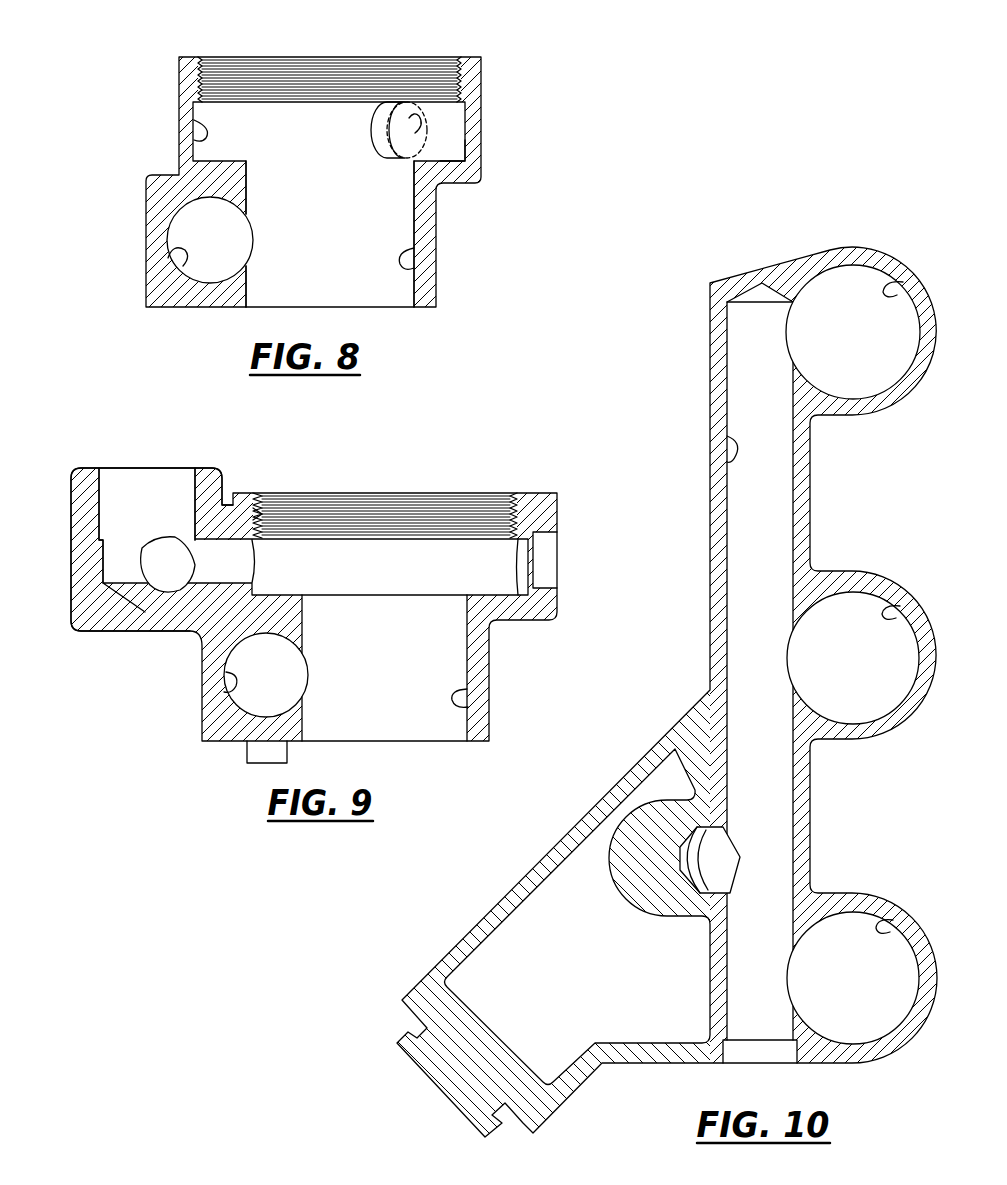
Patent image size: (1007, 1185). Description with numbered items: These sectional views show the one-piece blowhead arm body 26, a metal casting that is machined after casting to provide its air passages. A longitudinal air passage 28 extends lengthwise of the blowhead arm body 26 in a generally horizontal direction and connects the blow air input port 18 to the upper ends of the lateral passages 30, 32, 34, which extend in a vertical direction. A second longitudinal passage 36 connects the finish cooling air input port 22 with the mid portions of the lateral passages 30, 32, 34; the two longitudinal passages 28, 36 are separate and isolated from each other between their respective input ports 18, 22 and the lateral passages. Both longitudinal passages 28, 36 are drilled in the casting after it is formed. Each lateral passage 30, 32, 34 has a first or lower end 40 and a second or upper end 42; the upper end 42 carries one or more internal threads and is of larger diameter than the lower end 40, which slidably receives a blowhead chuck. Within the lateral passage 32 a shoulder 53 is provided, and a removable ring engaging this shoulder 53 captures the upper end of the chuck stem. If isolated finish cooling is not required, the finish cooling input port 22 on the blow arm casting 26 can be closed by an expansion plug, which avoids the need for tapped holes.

In FIG. 9, the blow air input port 18 is at (100, 507).
In FIG. 10, the finish cooling air input port 22 is at (706, 880).
In FIG. 8, the blowhead arm body 26 is at (428, 46).
In FIG. 9, the blowhead arm body 26 is at (464, 471).
In FIG. 10, the blowhead arm body 26 is at (711, 358).
In FIG. 8, the longitudinal air passage 28 is at (415, 133).
In FIG. 9, the longitudinal air passage 28 is at (202, 582).
In FIG. 8, the lateral passage 30 is at (388, 203).
In FIG. 10, the lateral passage 30 is at (868, 360).
In FIG. 9, the lateral passage 32 is at (443, 657).
In FIG. 10, the lateral passage 32 is at (868, 695).
In FIG. 10, the lateral passage 34 is at (867, 1010).
In FIG. 8, the second longitudinal passage 36 is at (183, 266).
In FIG. 9, the second longitudinal passage 36 is at (235, 683).
In FIG. 10, the second longitudinal passage 36 is at (733, 446).
In FIG. 8, the first or lower end 40 is at (406, 264).
In FIG. 9, the first or lower end 40 is at (466, 704).
In FIG. 10, the first or lower end 40 is at (900, 282).
In FIG. 8, the second or upper end 42 is at (200, 127).
In FIG. 9, the second or upper end 42 is at (262, 514).
In FIG. 8, the shoulder 53 is at (448, 161).
In FIG. 9, the shoulder 53 is at (492, 595).